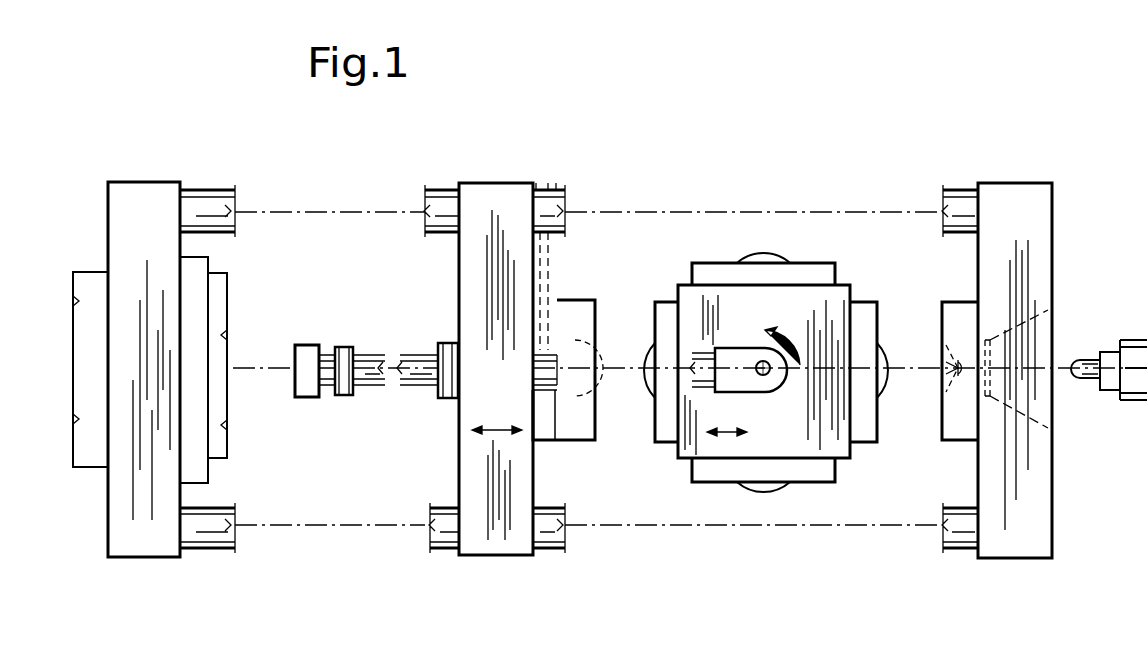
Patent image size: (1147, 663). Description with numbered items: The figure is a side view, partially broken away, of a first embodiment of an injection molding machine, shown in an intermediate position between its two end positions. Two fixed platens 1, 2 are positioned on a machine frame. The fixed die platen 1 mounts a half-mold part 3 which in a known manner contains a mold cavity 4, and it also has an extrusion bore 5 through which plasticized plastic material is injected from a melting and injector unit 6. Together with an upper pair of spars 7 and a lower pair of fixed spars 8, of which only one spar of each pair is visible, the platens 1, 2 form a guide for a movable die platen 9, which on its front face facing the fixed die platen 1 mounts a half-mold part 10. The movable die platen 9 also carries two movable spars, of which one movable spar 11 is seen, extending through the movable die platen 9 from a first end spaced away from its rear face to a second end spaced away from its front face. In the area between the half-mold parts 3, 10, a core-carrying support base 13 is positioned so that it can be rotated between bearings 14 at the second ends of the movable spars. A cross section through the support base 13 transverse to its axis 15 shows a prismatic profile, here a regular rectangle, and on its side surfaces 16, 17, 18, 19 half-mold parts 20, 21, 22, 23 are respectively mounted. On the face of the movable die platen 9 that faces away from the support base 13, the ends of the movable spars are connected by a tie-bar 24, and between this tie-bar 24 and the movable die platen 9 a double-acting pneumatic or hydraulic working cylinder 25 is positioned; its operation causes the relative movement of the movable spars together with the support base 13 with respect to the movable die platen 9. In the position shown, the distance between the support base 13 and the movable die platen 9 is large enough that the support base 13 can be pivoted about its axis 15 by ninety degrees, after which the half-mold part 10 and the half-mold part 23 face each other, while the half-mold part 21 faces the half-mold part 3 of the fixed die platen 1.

The fixed die platen 1 is at (1013, 200).
The fixed platen 2 is at (146, 200).
The half-mold part 3 is at (962, 322).
The mold cavity 4 is at (944, 355).
The extrusion bore 5 is at (960, 372).
The melting and injector unit 6 is at (1085, 355).
The upper pair of spars 7 is at (208, 207).
The lower pair of fixed spars 8 is at (212, 530).
The movable die platen 9 is at (490, 210).
The half-mold part 10 is at (575, 310).
The movable spar 11 is at (440, 372).
The core-carrying support base 13 is at (787, 300).
The bearings 14 is at (763, 376).
The axis 15 is at (767, 378).
The side surface 16 is at (684, 408).
The side surface 17 is at (860, 292).
The side surface 18 is at (846, 290).
The side surface 19 is at (668, 290).
The half-mold part 20 is at (817, 470).
The half-mold part 21 is at (880, 432).
The half-mold part 22 is at (722, 270).
The half-mold part 23 is at (643, 310).
The tie-bar 24 is at (307, 360).
The working cylinder 25 is at (365, 378).